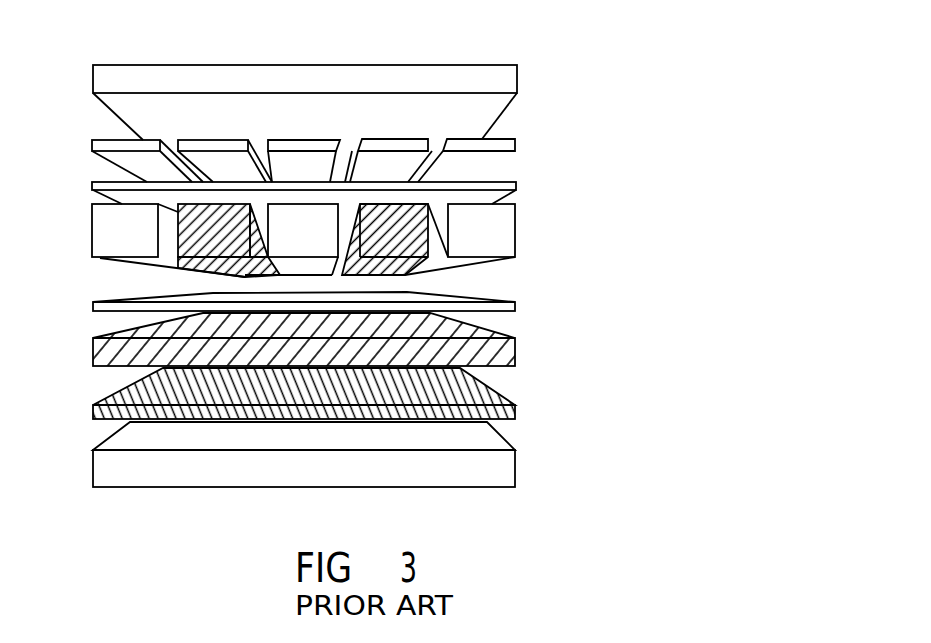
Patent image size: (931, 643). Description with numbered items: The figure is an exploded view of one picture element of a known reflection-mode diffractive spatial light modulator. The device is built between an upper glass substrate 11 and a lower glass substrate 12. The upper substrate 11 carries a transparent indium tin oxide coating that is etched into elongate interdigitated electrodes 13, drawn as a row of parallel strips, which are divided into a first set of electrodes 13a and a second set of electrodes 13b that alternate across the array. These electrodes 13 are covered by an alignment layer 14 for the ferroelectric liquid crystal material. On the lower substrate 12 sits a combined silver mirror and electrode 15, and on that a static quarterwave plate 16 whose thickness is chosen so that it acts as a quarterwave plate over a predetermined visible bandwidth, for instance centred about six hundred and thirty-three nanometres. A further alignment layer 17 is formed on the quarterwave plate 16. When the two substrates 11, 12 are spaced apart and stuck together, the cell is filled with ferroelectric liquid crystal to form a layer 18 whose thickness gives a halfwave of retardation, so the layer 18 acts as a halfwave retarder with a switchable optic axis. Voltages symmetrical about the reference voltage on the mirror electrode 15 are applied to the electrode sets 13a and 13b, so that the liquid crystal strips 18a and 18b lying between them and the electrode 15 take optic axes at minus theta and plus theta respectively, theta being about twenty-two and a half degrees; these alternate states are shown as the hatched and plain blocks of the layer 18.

The upper glass substrate 11 is at (136, 81).
The lower glass substrate 12 is at (442, 467).
The interdigitated electrodes 13 is at (303, 91).
The first set of interdigitated electrodes 13a is at (362, 142).
The second set of interdigitated electrodes 13b is at (277, 143).
The alignment layer 14 is at (506, 194).
The combined mirror and electrode 15 is at (490, 395).
The static quarterwave plate 16 is at (484, 345).
The further alignment layer 17 is at (515, 306).
The ferroelectric liquid crystal layer 18 is at (425, 203).
The ferroelectric liquid crystal material strip 18a is at (440, 243).
The ferroelectric liquid crystal material strip 18b is at (285, 237).